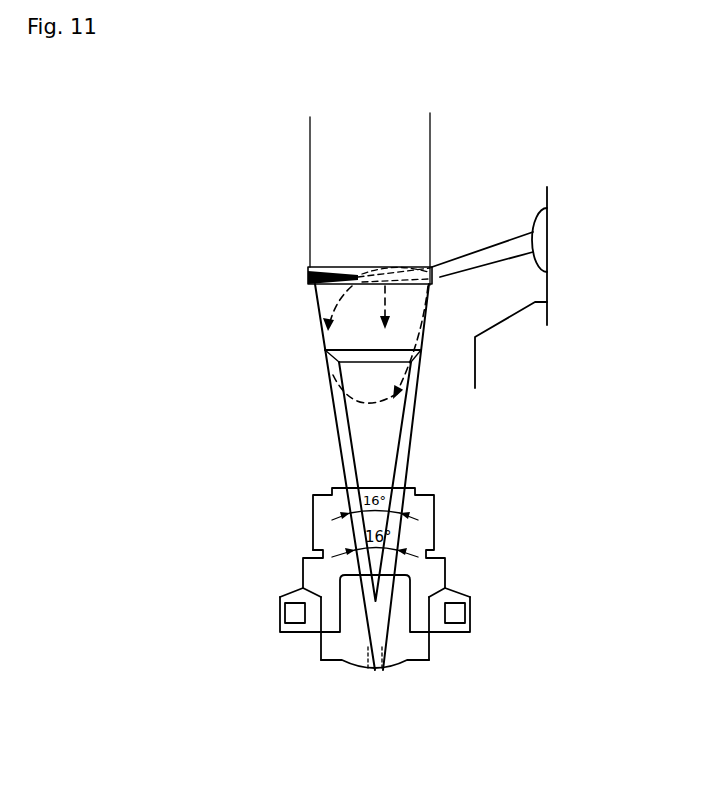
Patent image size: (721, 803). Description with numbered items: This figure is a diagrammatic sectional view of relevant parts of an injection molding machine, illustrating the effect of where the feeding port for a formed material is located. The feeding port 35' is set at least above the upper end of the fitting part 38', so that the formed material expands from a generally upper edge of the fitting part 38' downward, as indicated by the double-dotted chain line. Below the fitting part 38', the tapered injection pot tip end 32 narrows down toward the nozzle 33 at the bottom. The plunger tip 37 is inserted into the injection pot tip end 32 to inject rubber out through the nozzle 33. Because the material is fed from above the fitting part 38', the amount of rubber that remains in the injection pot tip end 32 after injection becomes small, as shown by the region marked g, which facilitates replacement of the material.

The remaining rubber amount g is at (306, 280).
The injection pot tip end 32 is at (402, 458).
The nozzle 33 is at (397, 655).
The feeding port 35' is at (489, 287).
The plunger tip 37 is at (350, 447).
The fitting part 38' is at (335, 344).